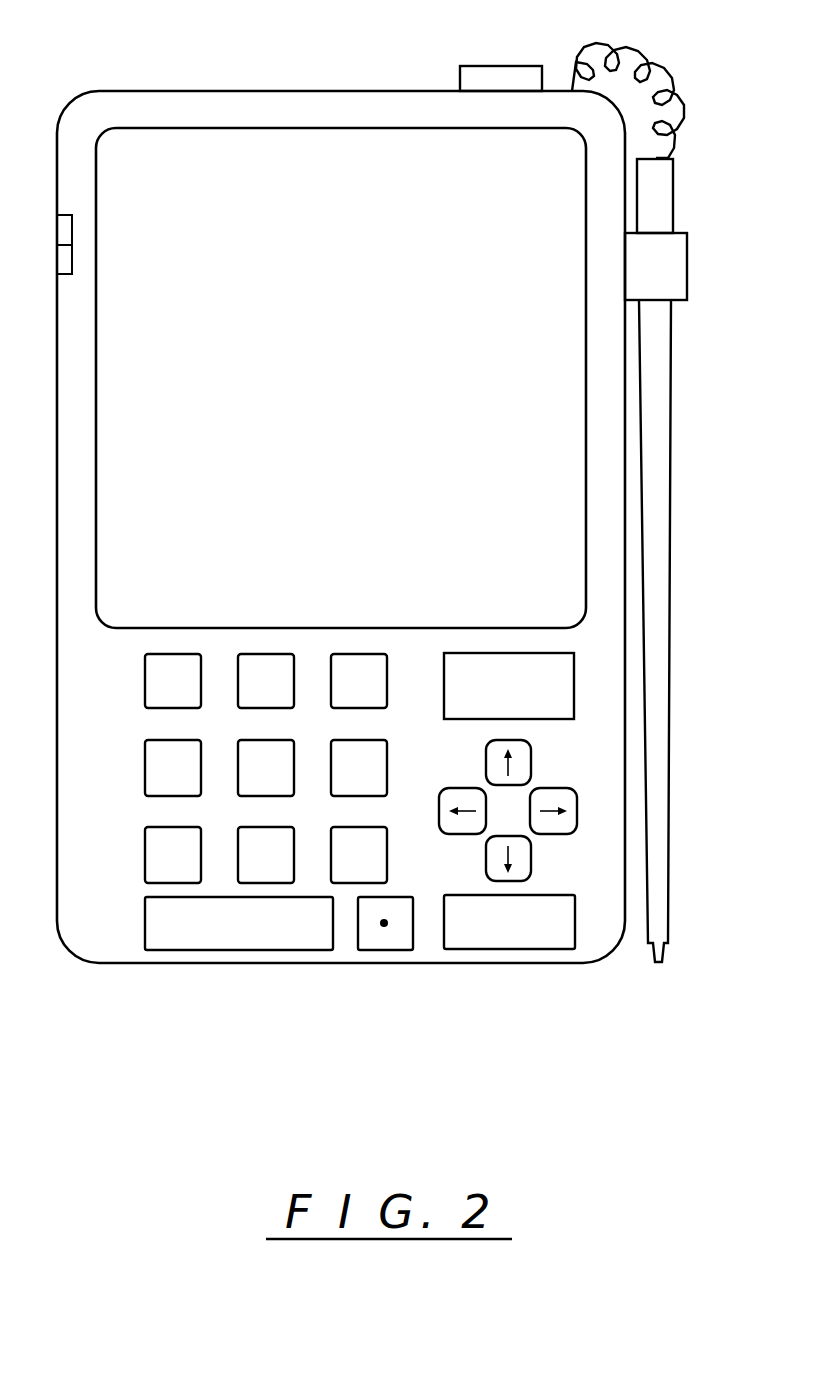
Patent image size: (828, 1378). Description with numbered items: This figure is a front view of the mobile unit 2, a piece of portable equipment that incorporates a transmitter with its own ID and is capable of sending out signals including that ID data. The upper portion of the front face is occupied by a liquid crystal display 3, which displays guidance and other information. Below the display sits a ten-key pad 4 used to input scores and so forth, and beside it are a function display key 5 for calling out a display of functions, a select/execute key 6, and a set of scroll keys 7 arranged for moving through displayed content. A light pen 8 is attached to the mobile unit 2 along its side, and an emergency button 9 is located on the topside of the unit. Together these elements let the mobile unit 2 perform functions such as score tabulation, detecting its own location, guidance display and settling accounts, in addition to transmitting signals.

The mobile unit 2 is at (99, 80).
The liquid crystal display 3 is at (190, 128).
The ten-key pad 4 is at (232, 850).
The function display key 5 is at (561, 668).
The select/execute key 6 is at (508, 941).
The scroll keys 7 is at (517, 808).
The light pen 8 is at (660, 830).
The emergency button 9 is at (495, 63).